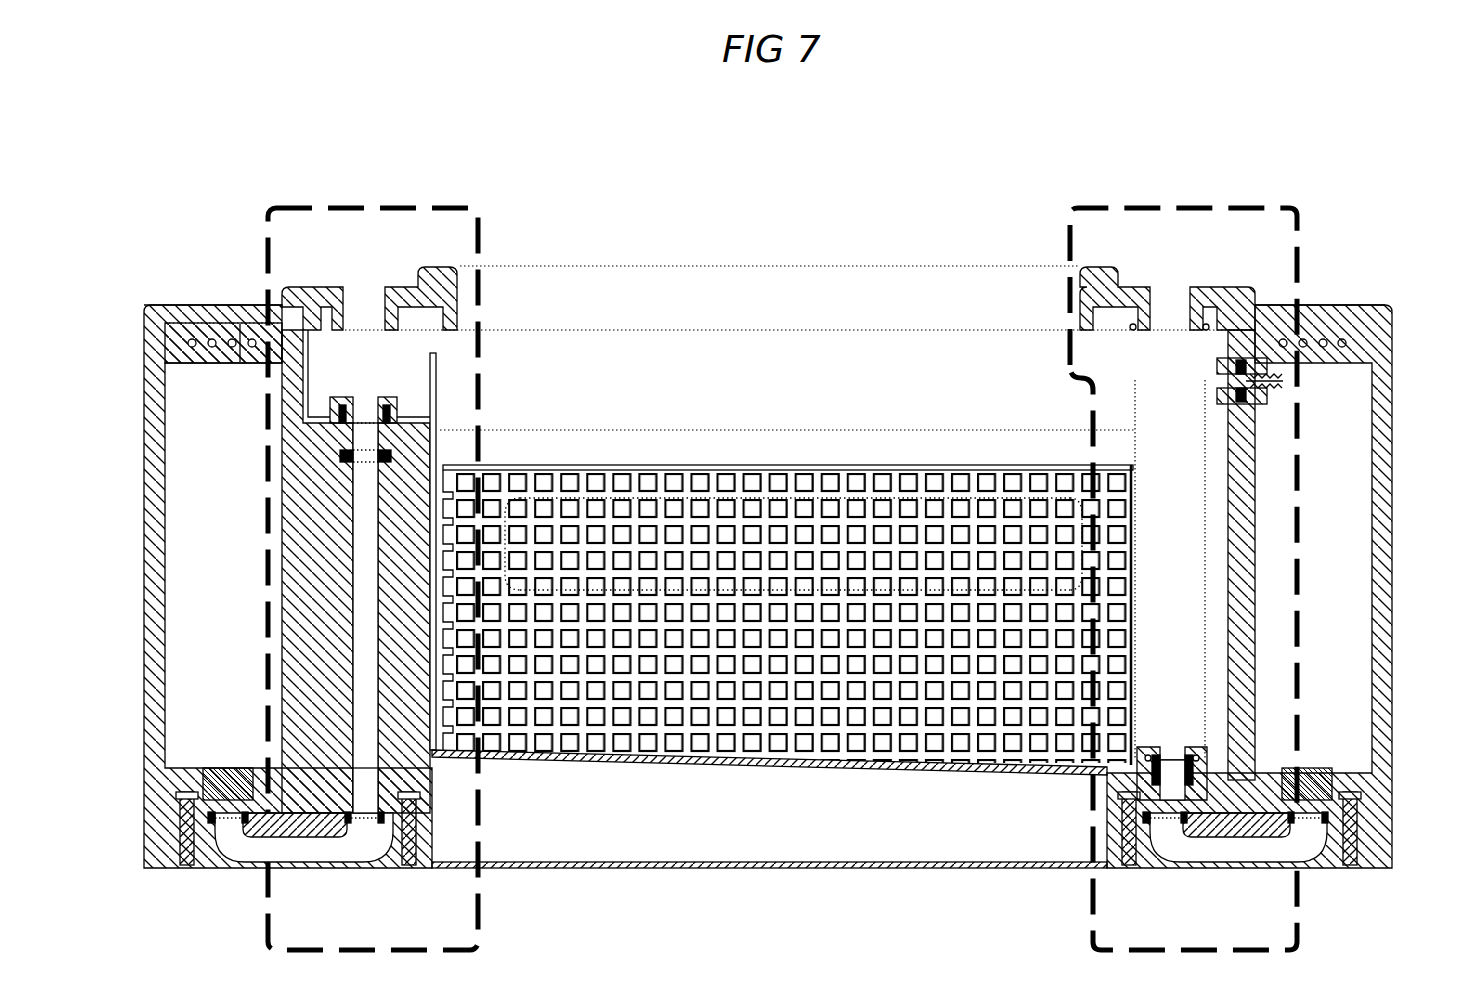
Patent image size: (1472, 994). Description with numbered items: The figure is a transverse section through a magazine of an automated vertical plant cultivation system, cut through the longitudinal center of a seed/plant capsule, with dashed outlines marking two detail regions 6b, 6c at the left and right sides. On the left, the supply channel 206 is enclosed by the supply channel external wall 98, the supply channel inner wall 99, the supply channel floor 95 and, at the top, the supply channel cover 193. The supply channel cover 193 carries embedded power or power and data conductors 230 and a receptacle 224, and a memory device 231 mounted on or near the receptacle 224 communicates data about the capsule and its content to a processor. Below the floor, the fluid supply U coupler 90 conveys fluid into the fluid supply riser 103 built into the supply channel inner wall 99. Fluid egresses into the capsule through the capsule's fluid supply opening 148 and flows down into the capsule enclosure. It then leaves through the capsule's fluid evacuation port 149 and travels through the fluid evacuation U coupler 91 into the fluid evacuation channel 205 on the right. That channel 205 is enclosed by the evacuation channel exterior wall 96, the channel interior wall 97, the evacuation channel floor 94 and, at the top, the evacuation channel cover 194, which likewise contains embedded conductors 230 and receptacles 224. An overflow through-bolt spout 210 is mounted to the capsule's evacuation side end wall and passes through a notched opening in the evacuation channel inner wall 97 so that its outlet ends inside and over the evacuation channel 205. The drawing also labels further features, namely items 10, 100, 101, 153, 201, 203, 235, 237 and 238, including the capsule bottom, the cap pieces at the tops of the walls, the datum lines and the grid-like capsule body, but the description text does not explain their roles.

The detail region of FIG. 6b is at (373, 202).
The detail region of FIG. 6c is at (1191, 202).
The substrate plate 10 is at (777, 770).
The fluid supply U coupler 90 is at (317, 868).
The fluid evacuation U coupler 91 is at (1225, 868).
The evacuation channel floor 94 is at (1344, 766).
The supply channel floor 95 is at (192, 766).
The evacuation channel exterior wall 96 is at (1392, 573).
The evacuation channel inner wall 97 is at (1255, 628).
The supply channel external wall 98 is at (144, 655).
The supply channel inner wall 99 is at (282, 572).
The left top cap 100 is at (363, 286).
The right top cap 101 is at (1170, 286).
The fluid supply riser 103 is at (436, 790).
The fluid supply opening 148 is at (365, 408).
The fluid evacuation port 149 is at (1167, 746).
The right channel region 153 is at (1135, 412).
The supply channel cover 193 is at (160, 304).
The evacuation channel cover 194 is at (1345, 304).
The reference plane 201 is at (767, 264).
The grid structure 203 is at (905, 464).
The fluid evacuation channel 205 is at (1313, 565).
The supply channel 206 is at (223, 565).
The overflow through-bolt spout 210 is at (1283, 381).
The receptacle 224 is at (240, 365).
The power or power and data conductors 230 is at (192, 348).
The memory device 231 is at (213, 323).
The slot 235 is at (367, 627).
The bolts 237 is at (187, 868).
The bottom plate 238 is at (740, 870).